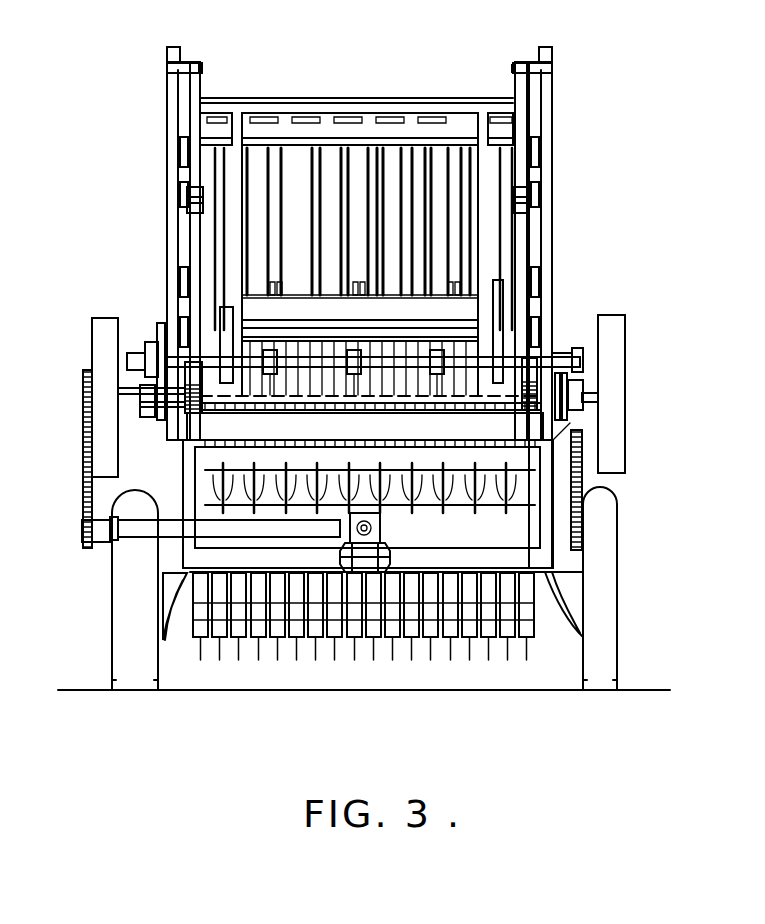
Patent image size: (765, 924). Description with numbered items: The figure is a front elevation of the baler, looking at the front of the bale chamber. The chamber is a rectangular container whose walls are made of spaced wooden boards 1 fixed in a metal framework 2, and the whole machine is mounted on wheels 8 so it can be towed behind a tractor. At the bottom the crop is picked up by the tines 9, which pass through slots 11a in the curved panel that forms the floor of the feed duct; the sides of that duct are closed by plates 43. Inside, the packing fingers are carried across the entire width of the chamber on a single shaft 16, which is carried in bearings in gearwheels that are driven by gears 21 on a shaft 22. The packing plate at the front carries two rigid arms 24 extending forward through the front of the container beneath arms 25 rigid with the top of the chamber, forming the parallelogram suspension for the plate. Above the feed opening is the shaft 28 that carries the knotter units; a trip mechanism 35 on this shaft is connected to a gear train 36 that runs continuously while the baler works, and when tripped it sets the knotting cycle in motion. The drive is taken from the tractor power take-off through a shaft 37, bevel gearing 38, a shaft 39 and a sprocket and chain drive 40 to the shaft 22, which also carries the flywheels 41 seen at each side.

The wooden boards 1 is at (333, 190).
The metal framework 2 is at (553, 175).
The wheels 8 is at (650, 553).
The tines 9 is at (293, 655).
The slots 11a is at (465, 707).
The shaft 16 is at (435, 420).
The gears 21 is at (540, 360).
The shaft 22 is at (595, 393).
The rigid arms 24 is at (527, 203).
The arms 25 is at (548, 50).
The shaft 28 is at (560, 358).
The trip mechanism 35 is at (153, 342).
The gear train 36 is at (162, 330).
The shaft 37 is at (380, 528).
The bevel gearing 38 is at (340, 545).
The shaft 39 is at (245, 530).
The sprocket and chain drive 40 is at (86, 440).
The flywheels 41 is at (652, 342).
The plates 43 is at (181, 710).